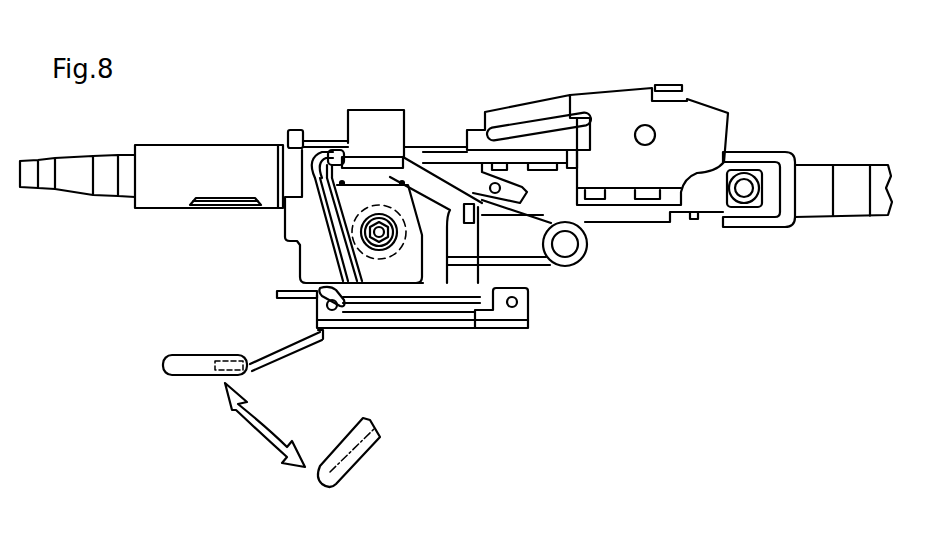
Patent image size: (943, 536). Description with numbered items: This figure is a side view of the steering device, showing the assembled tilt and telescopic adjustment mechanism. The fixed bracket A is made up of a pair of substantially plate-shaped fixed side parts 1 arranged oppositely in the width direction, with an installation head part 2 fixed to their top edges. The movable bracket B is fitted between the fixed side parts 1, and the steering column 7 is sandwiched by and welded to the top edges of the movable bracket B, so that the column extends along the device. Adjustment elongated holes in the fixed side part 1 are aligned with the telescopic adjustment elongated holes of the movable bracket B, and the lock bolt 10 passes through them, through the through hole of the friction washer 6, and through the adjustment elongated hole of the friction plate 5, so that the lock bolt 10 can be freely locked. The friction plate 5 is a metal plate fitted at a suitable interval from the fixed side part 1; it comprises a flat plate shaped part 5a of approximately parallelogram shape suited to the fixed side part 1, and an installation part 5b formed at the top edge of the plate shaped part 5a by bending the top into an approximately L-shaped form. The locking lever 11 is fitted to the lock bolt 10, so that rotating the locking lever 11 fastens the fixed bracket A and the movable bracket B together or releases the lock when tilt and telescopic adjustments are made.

The fixed side part 1 is at (437, 270).
The installation head part 2 is at (381, 114).
The friction plate 5 is at (408, 262).
The plate shaped part 5a is at (352, 210).
The installation part 5b is at (344, 157).
The friction washer 6 is at (390, 262).
The steering column 7 is at (219, 143).
The lock bolt 10 is at (380, 245).
The locking lever 11 is at (197, 383).
The fixed bracket A is at (300, 258).
The movable bracket B is at (470, 278).